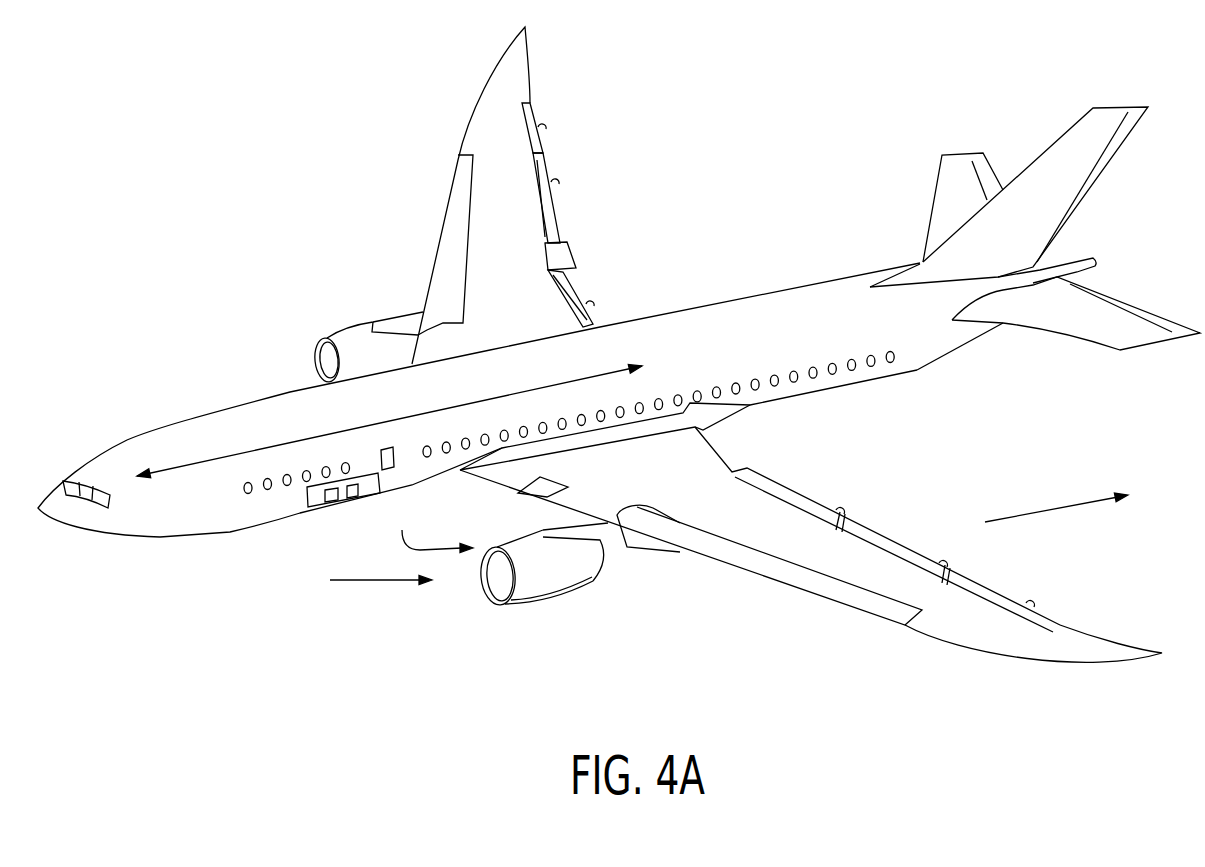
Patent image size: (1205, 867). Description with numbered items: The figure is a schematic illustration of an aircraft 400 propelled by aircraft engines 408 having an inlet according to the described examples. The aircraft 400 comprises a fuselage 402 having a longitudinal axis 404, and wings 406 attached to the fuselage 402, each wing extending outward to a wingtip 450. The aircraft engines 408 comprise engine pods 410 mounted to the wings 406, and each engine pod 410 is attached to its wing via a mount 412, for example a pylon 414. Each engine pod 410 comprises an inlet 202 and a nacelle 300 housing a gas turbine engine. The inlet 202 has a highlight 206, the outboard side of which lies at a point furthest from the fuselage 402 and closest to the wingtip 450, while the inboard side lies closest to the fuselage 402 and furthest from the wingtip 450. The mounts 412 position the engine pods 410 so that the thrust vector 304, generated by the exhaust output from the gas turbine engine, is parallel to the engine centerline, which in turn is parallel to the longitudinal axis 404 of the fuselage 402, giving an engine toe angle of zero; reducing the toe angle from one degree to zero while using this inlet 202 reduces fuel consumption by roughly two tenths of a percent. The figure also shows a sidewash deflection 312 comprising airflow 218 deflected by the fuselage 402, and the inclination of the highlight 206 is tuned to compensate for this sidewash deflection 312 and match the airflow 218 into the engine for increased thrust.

The aircraft 400 is at (772, 107).
The fuselage 402 is at (683, 323).
The longitudinal axis 404 is at (245, 452).
The wings 406 is at (1007, 640).
The wingtip 450 is at (1151, 670).
The inlet 202 is at (485, 609).
The highlight 206 is at (500, 615).
The aircraft engines 408 is at (545, 617).
The engine pod 410 is at (551, 588).
The mount 412 is at (615, 541).
The pylon 414 is at (648, 528).
The nacelle 300 is at (430, 524).
The thrust vector 304 is at (1063, 505).
The sidewash deflection 312 is at (360, 580).
The airflow 218 is at (425, 580).